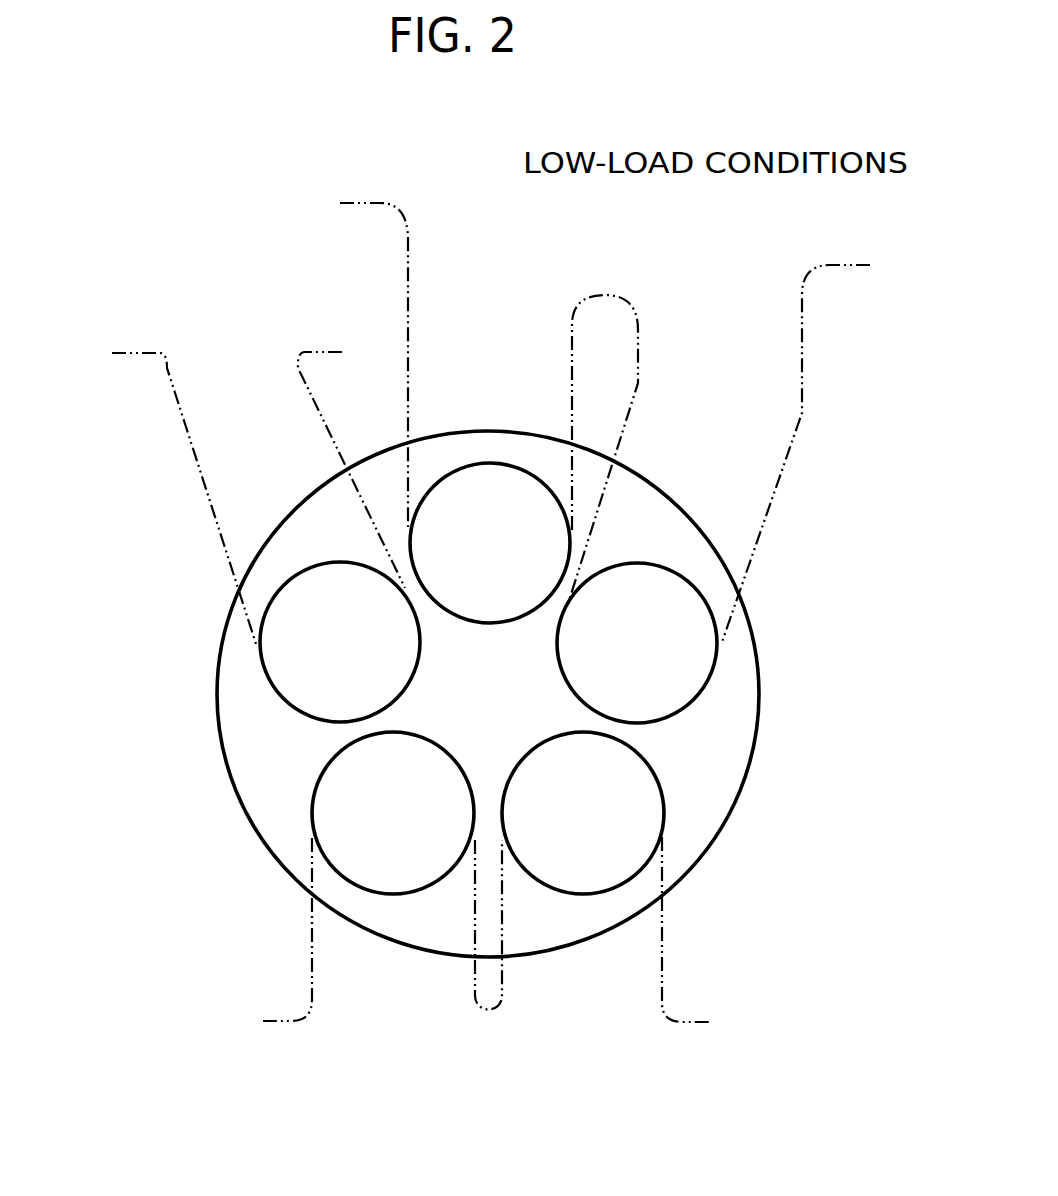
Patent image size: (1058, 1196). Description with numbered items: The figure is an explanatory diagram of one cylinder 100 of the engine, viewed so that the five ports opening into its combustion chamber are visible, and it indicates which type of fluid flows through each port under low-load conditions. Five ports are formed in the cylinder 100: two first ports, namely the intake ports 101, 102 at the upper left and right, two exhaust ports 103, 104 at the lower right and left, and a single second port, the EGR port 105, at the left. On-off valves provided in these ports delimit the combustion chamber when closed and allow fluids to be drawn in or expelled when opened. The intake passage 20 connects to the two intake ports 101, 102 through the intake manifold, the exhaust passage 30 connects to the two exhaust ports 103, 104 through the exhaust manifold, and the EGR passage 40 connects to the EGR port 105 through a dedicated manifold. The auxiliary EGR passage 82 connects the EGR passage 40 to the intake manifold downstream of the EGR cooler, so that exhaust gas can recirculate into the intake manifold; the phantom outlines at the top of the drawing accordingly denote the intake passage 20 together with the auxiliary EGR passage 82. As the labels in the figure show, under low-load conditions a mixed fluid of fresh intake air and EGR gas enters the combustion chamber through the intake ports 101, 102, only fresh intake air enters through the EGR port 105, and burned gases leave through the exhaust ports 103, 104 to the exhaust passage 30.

The cylinder 100 is at (217, 695).
The first port (intake port) 101 is at (490, 463).
The first port (intake port) 102 is at (722, 642).
The exhaust port 103 is at (667, 815).
The exhaust port 104 is at (312, 813).
The second port (EGR port) 105 is at (258, 647).
The EGR passage 40 is at (190, 453).
The intake passage 20 is at (306, 395).
The auxiliary EGR passage 82 is at (408, 295).
The exhaust passage 30 is at (662, 987).